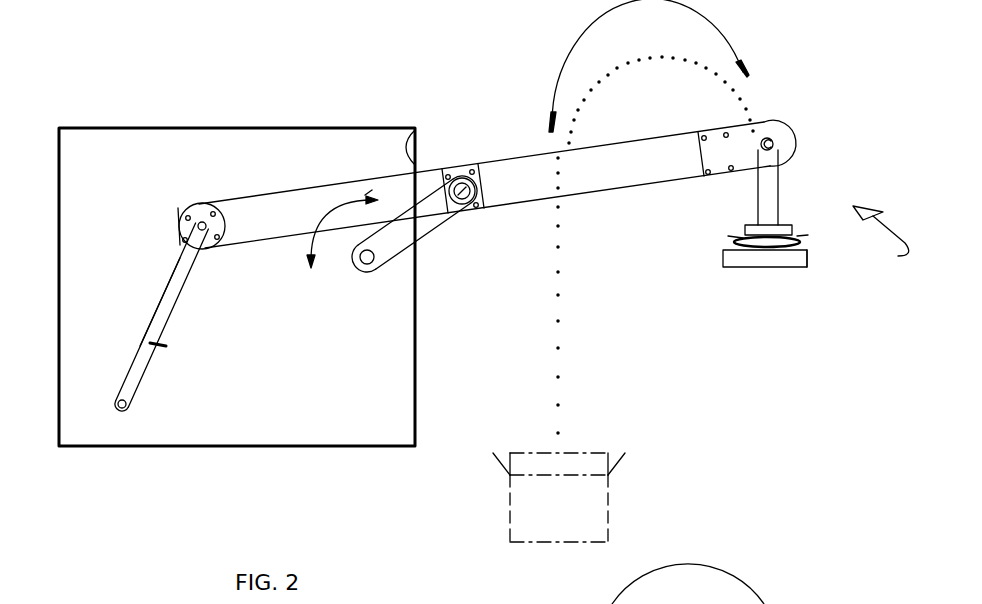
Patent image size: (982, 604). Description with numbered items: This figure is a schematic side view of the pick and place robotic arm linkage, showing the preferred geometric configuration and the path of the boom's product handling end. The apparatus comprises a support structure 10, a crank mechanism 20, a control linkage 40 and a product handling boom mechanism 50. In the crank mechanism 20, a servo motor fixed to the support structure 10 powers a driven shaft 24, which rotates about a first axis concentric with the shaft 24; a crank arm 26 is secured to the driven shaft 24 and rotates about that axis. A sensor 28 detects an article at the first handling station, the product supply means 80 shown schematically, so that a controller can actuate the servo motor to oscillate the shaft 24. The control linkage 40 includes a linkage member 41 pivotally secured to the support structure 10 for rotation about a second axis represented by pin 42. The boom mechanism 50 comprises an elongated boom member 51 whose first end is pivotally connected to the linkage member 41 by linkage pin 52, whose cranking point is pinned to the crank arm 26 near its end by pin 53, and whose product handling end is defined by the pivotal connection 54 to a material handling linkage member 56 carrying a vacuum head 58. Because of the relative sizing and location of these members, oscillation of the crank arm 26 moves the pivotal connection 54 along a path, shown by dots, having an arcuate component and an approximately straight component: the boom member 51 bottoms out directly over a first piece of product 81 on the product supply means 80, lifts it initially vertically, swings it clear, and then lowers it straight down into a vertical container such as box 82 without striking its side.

The support structure 10 is at (103, 430).
The crank mechanism 20 is at (390, 245).
The driven shaft 24 is at (353, 248).
The crank arm 26 is at (435, 213).
The sensor 28 is at (881, 237).
The control linkage 40 is at (166, 345).
The linkage member 41 is at (167, 308).
The pin 42 is at (127, 402).
The product handling boom mechanism 50 is at (275, 217).
The elongated boom member 51 is at (365, 195).
The linkage pin 52 is at (199, 220).
The pin 53 is at (413, 129).
The pivotal connection 54 is at (770, 124).
The material handling linkage member 56 is at (772, 188).
The vacuum head 58 is at (782, 226).
The product supply means 80 is at (735, 263).
The first piece of product 81 is at (807, 248).
The box 82 is at (597, 521).